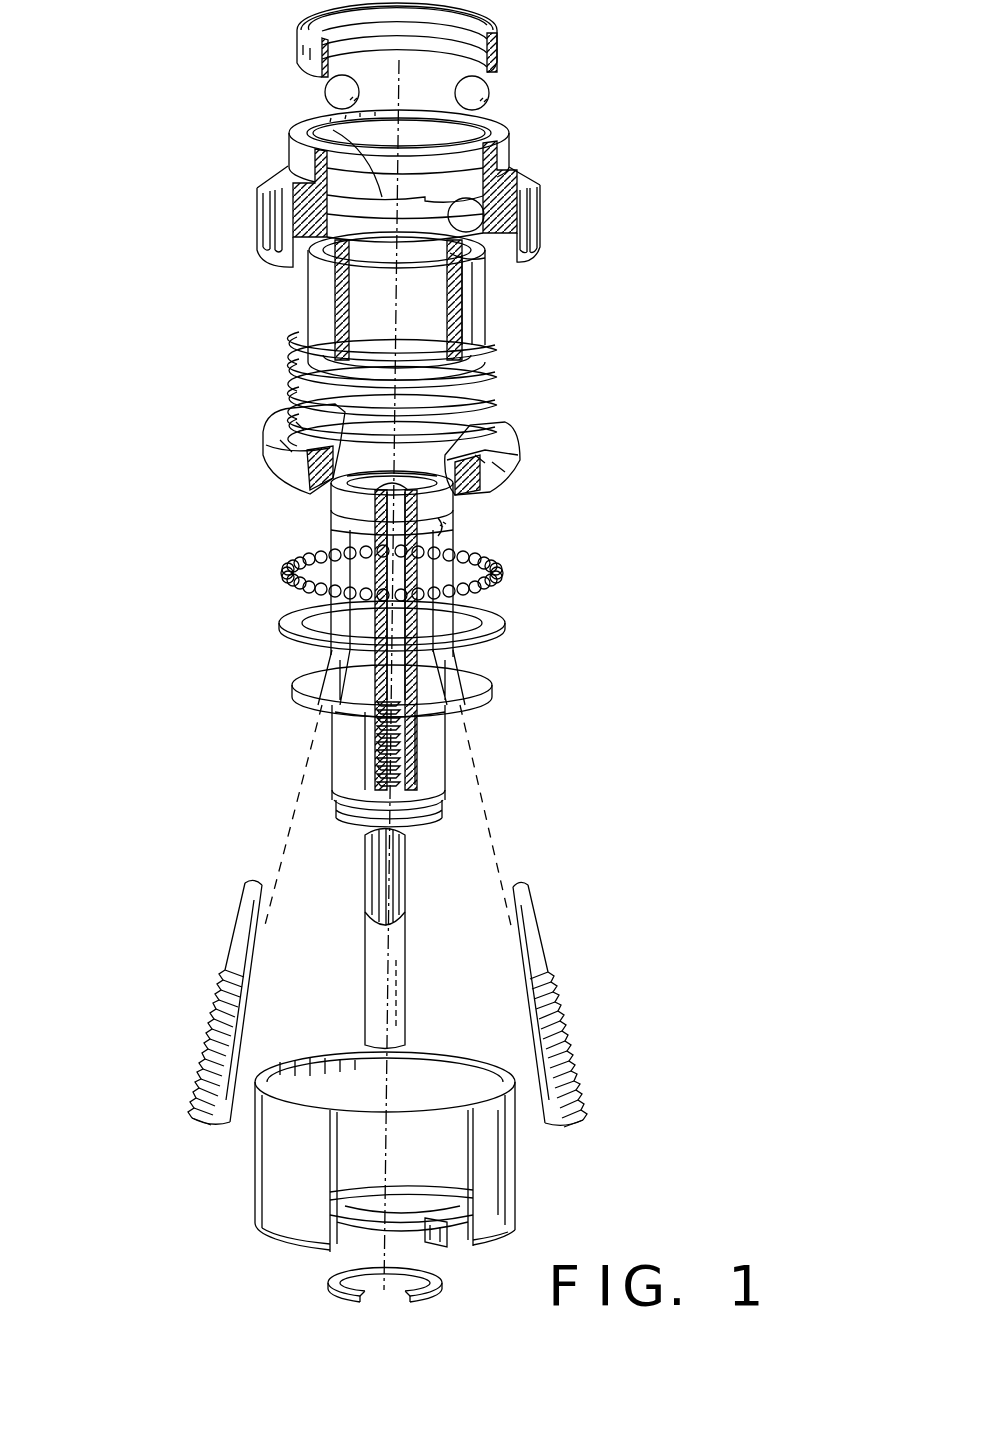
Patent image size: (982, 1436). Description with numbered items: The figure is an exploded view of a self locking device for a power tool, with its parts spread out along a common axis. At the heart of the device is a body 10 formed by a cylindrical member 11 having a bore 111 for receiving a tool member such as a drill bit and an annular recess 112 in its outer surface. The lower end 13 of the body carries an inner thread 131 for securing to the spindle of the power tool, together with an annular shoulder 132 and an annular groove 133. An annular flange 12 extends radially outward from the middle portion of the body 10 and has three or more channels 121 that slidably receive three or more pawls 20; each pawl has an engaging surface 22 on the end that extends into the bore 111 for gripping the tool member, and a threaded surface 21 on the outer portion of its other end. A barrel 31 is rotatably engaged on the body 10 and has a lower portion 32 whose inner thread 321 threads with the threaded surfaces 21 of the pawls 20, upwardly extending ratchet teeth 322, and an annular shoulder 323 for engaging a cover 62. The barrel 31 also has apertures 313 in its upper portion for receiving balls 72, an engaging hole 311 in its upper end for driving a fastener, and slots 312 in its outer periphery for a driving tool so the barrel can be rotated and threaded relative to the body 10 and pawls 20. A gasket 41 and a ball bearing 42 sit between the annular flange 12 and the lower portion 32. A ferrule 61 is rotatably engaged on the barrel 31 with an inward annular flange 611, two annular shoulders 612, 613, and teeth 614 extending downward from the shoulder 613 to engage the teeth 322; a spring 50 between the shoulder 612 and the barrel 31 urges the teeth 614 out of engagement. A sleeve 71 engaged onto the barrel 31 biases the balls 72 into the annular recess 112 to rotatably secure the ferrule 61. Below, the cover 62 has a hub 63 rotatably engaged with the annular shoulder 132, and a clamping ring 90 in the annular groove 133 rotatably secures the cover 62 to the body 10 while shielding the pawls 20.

The body 10 is at (492, 665).
The cylindrical member 11 is at (463, 564).
The bore 111 is at (457, 500).
The annular recess 112 is at (447, 533).
The annular flange 12 is at (377, 683).
The channels 121 is at (460, 687).
The lower end 13 is at (397, 660).
The inner thread 131 is at (383, 747).
The annular shoulder 132 is at (440, 783).
The annular groove 133 is at (440, 807).
The pawls 20 is at (373, 1000).
The threaded surface 21 is at (203, 1055).
The engaging surface 22 is at (397, 858).
The barrel 31 is at (415, 306).
The engaging hole 311 is at (480, 263).
The slots 312 is at (473, 343).
The apertures 313 is at (467, 315).
The lower portion 32 is at (387, 426).
The inner thread 321 is at (512, 483).
The teeth 322 is at (283, 410).
The annular shoulder 323 is at (273, 450).
The gasket 41 is at (283, 623).
The ball bearing 42 is at (287, 570).
The spring 50 is at (487, 382).
The ferrule 61 is at (383, 185).
The annular flange 611 is at (495, 130).
The annular shoulder 612 is at (500, 195).
The annular shoulder 613 is at (330, 124).
The teeth 614 is at (490, 230).
The cover 62 is at (330, 1178).
The hub 63 is at (440, 1240).
The sleeve 71 is at (492, 18).
The balls 72 is at (328, 90).
The clamping ring 90 is at (333, 1285).